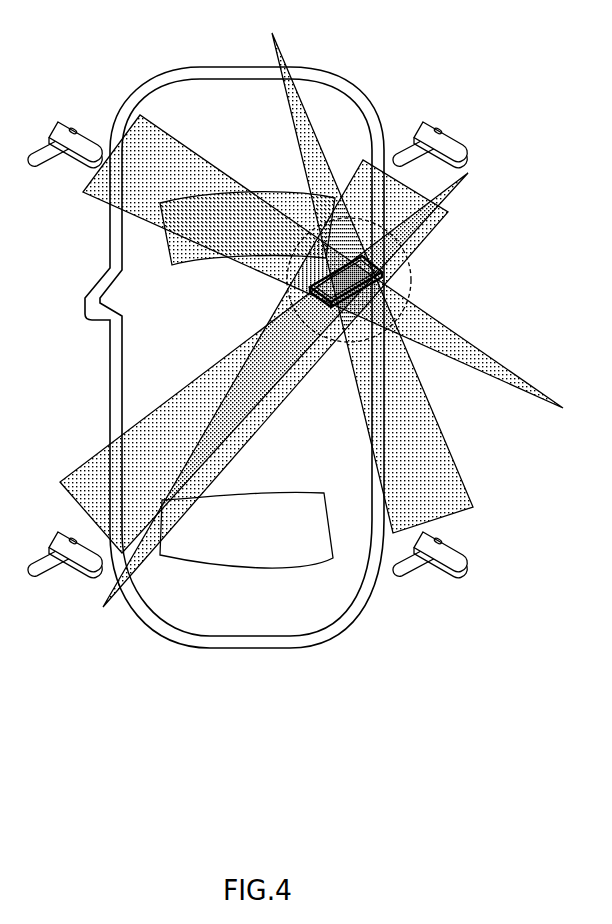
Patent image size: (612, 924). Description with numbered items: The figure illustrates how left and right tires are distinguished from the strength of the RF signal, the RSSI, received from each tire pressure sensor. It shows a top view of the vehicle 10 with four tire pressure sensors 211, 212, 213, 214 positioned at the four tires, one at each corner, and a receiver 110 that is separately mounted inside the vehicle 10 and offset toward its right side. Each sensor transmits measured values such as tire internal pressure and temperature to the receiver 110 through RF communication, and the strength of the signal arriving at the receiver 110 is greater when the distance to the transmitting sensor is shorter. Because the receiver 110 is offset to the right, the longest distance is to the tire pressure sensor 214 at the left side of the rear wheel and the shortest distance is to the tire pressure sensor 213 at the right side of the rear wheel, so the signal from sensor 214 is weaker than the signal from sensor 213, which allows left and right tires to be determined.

The vehicle 10 is at (226, 66).
The receiver 110 is at (407, 270).
The tire pressure sensor 211 is at (428, 120).
The tire pressure sensor 212 is at (78, 117).
The tire pressure sensor at the right side of the rear wheel 213 is at (413, 572).
The tire pressure sensor at the left side of the rear wheel 214 is at (53, 572).